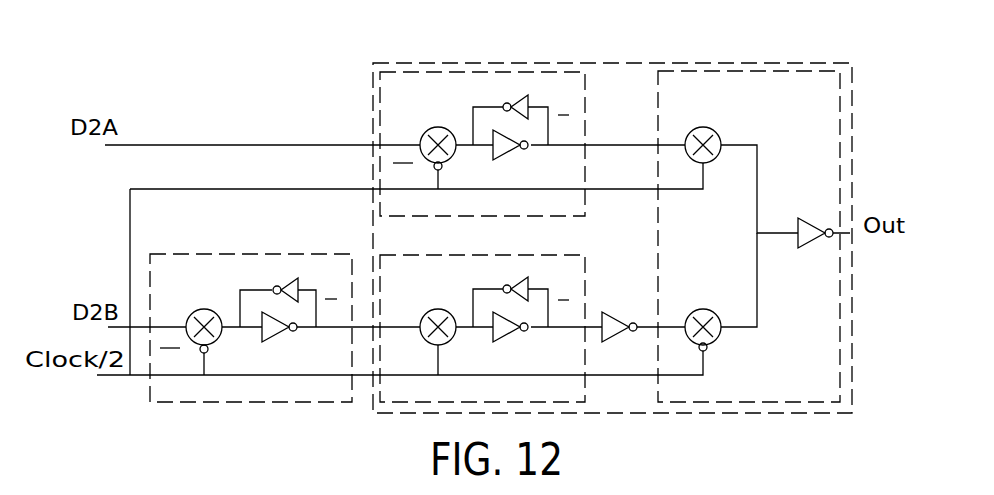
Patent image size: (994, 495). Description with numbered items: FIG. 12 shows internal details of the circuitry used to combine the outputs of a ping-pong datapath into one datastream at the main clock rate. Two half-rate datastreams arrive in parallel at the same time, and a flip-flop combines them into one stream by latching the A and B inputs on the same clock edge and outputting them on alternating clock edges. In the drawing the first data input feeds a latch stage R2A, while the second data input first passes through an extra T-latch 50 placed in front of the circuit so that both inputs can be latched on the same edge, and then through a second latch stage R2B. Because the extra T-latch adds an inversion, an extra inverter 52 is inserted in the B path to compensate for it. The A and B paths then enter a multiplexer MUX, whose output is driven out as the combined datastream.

The T-latch 50 is at (141, 232).
The inverter 52 is at (613, 312).
The register R2A is at (482, 144).
The register R2B is at (482, 328).
The multiplexer MUX is at (749, 236).